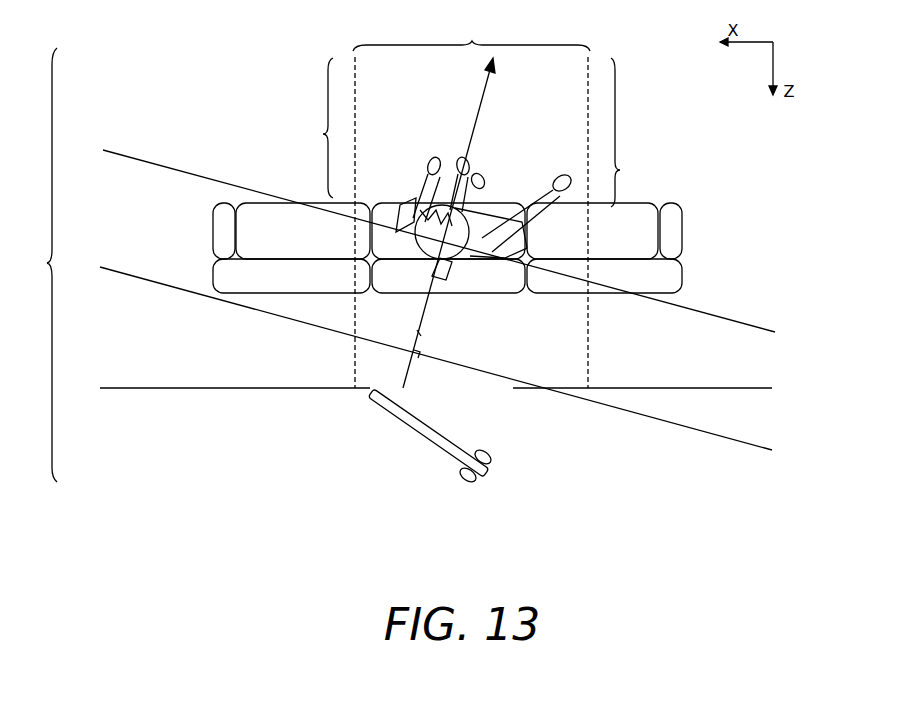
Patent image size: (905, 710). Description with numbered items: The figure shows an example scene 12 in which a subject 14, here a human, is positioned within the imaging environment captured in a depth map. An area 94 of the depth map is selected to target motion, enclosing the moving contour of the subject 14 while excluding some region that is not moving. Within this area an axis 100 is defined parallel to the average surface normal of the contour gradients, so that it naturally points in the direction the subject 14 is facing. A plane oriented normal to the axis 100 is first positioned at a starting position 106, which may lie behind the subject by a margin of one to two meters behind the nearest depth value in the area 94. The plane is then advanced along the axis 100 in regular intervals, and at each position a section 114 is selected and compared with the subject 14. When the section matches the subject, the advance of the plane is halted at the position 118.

The scene 12 is at (39, 265).
The subject 14 is at (407, 193).
The area 94 is at (471, 36).
The axis 100 is at (481, 107).
The starting position 106 is at (160, 283).
The section 114 is at (476, 132).
The position at which advance of the plane is halted 118 is at (162, 166).